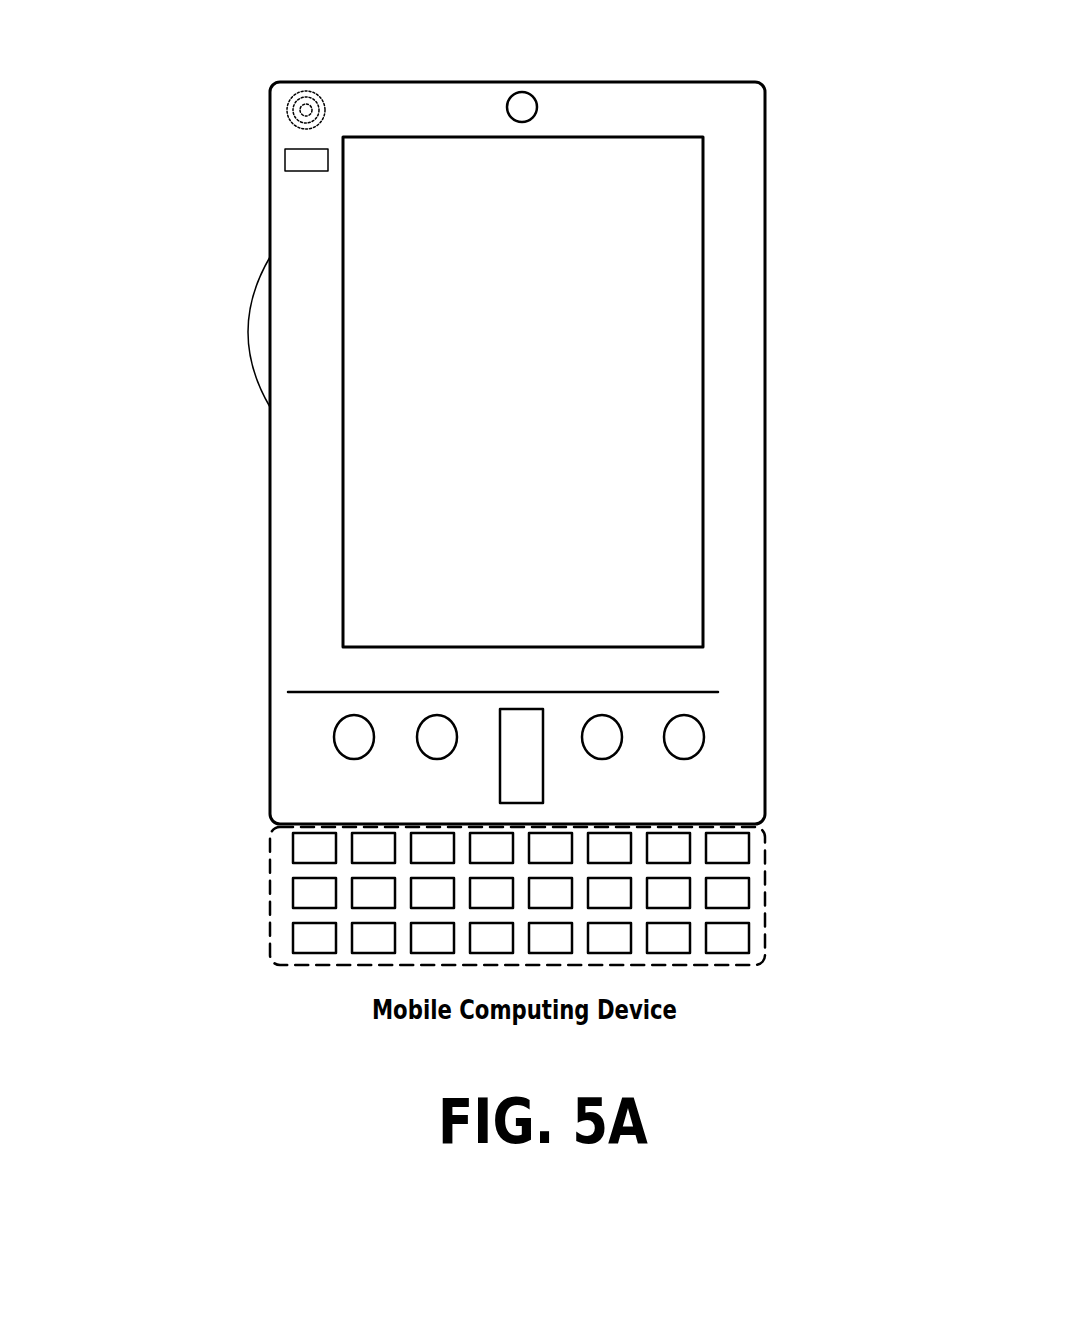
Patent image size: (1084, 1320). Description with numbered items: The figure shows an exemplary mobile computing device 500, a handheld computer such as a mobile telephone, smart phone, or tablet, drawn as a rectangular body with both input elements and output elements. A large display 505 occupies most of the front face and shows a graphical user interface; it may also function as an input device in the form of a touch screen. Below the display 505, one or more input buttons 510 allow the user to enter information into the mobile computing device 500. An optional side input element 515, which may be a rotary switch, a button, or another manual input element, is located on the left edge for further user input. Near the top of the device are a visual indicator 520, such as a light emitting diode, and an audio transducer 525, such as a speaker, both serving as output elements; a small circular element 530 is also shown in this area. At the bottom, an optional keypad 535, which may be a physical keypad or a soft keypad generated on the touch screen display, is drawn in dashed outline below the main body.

The mobile computing device 500 is at (755, 100).
The display 505 is at (455, 560).
The input buttons 510 is at (517, 762).
The side input element 515 is at (262, 331).
The visual indicator 520 is at (287, 163).
The audio transducer 525 is at (285, 112).
The camera 530 is at (533, 104).
The keypad 535 is at (280, 938).